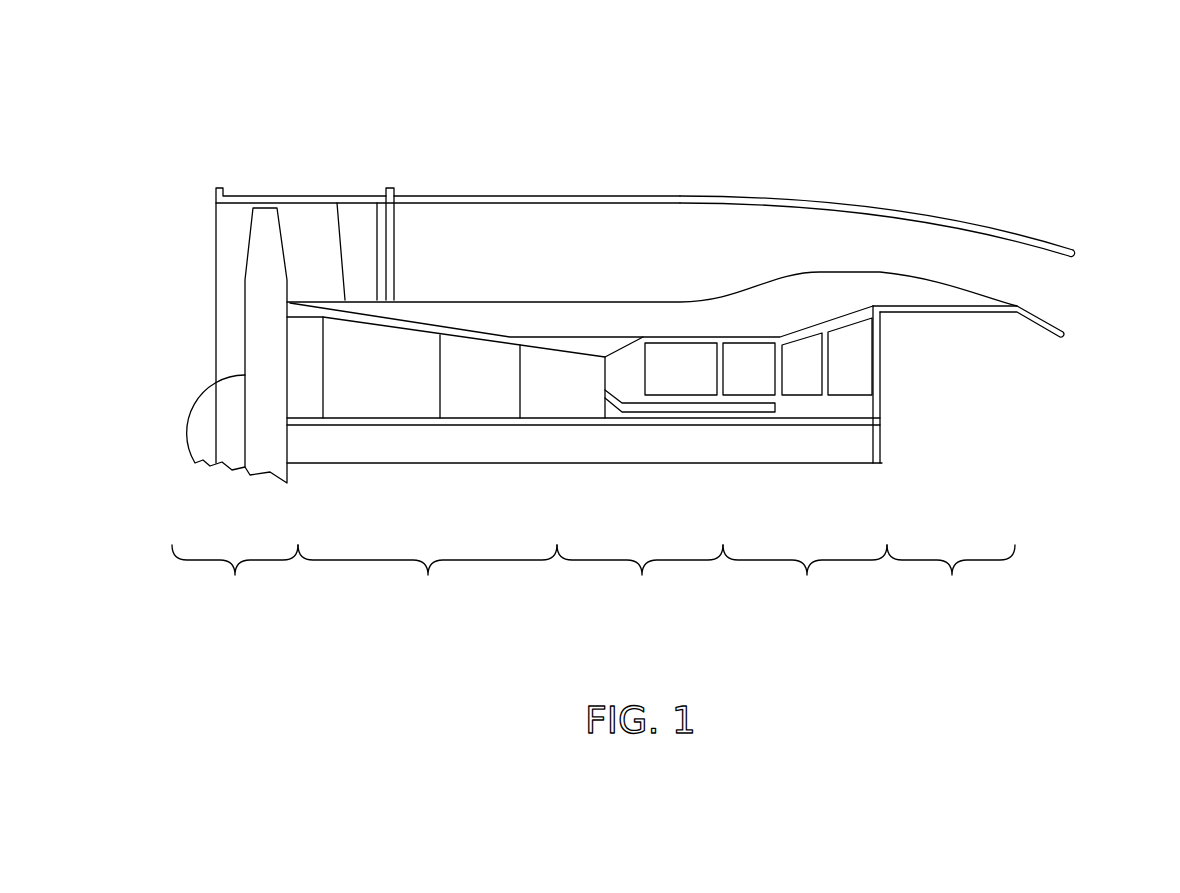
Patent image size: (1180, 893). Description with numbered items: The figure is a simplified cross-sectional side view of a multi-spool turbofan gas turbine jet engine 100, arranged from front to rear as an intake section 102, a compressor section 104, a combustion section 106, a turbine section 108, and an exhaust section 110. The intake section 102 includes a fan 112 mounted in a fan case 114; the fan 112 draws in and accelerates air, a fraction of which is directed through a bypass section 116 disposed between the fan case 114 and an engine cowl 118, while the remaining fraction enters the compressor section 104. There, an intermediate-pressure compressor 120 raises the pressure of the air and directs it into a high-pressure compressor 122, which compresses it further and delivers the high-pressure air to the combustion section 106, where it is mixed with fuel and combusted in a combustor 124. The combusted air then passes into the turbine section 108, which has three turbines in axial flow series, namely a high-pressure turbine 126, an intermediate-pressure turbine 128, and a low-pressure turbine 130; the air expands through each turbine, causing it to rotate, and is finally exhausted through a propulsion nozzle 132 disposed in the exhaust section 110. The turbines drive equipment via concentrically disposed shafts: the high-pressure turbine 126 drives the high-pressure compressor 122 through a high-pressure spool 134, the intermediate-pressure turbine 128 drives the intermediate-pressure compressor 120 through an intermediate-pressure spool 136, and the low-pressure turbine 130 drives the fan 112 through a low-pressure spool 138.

The multi-spool turbofan gas turbine jet engine 100 is at (429, 153).
The intake section 102 is at (235, 578).
The compressor section 104 is at (427, 578).
The combustion section 106 is at (640, 578).
The turbine section 108 is at (805, 578).
The exhaust section 110 is at (951, 578).
The fan 112 is at (257, 303).
The fan case 114 is at (313, 197).
The bypass section 116 is at (567, 213).
The engine cowl 118 is at (636, 302).
The intermediate-pressure compressor 120 is at (387, 407).
The high-pressure compressor 122 is at (560, 405).
The combustor 124 is at (692, 357).
The high-pressure turbine 126 is at (753, 358).
The intermediate-pressure turbine 128 is at (808, 347).
The low-pressure turbine 130 is at (862, 338).
The propulsion nozzle 132 is at (1052, 376).
The high-pressure spool 134 is at (645, 405).
The intermediate-pressure spool 136 is at (728, 420).
The low-pressure spool 138 is at (793, 452).